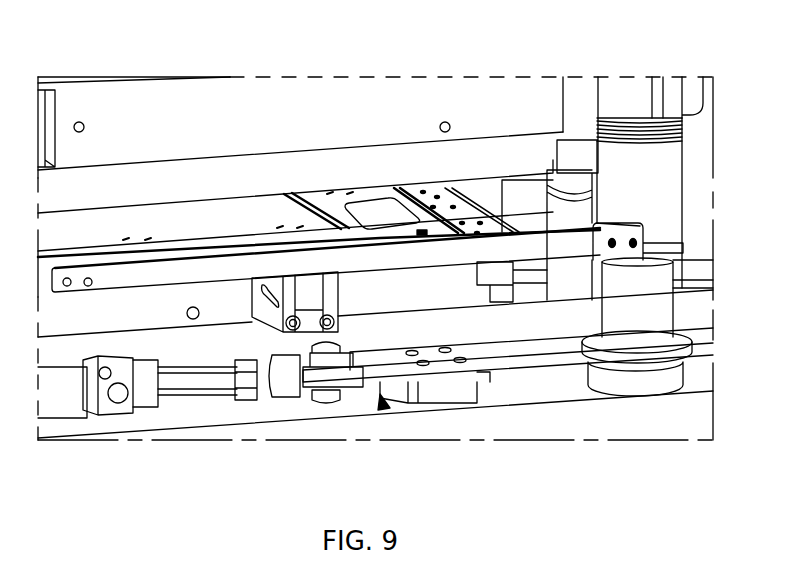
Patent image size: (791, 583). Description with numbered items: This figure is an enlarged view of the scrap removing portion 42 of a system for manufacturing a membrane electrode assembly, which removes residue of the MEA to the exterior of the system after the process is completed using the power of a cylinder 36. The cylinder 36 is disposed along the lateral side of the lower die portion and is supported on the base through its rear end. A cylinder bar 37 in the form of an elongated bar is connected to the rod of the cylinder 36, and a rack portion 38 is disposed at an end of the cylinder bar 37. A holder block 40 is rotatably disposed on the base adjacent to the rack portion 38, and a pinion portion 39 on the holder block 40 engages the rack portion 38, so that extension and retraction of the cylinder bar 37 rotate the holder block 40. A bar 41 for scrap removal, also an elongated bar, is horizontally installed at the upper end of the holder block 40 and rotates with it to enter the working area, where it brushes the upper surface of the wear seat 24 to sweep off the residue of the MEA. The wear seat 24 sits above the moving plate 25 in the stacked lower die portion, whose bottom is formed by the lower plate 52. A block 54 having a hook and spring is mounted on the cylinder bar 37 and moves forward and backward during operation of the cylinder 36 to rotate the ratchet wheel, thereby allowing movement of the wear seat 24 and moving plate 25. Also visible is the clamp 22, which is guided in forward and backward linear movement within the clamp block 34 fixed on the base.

The clamp 22 is at (308, 297).
The wear seat 24 is at (378, 208).
The moving plate 25 is at (455, 238).
The clamp block 34 is at (262, 308).
The cylinder 36 is at (65, 398).
The cylinder bar 37 is at (405, 358).
The rack portion 38 is at (660, 325).
The pinion portion 39 is at (683, 355).
The holder block 40 is at (673, 337).
The bar for scrap removal 41 is at (560, 248).
The scrap removing portion 42 is at (383, 405).
The lower plate 52 is at (140, 312).
The block 54 is at (455, 388).